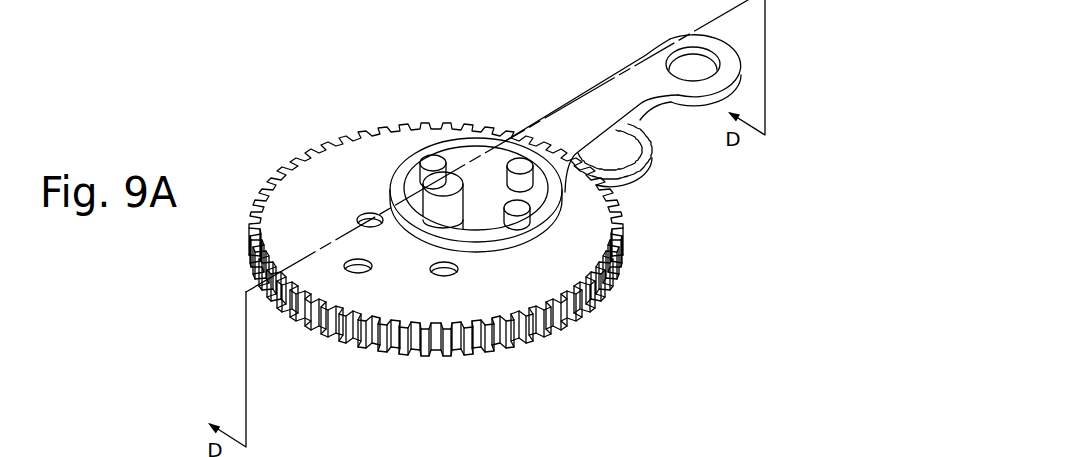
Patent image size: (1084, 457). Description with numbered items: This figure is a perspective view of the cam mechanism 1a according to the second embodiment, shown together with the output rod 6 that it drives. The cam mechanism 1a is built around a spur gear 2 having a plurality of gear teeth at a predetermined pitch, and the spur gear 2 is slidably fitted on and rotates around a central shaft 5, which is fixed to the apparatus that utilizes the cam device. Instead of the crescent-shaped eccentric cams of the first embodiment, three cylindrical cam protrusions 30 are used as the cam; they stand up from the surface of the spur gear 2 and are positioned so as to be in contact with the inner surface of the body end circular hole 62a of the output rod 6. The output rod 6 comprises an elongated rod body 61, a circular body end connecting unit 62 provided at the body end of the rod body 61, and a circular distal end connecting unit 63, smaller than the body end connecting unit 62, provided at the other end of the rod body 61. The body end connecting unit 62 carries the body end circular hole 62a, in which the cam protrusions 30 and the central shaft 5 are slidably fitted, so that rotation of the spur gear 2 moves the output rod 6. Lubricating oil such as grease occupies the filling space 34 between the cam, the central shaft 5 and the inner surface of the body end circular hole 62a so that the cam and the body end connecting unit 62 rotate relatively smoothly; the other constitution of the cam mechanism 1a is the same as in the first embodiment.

The cam mechanism 1a is at (304, 131).
The spur gear 2 is at (554, 282).
The central shaft 5 is at (433, 208).
The cylindrical cam protrusions 30 is at (425, 160).
The filling space 34 is at (481, 222).
The output rod 6 is at (757, 250).
The rod body 61 is at (632, 105).
The body end connecting unit 62 is at (558, 223).
The body end circular hole 62a is at (474, 152).
The distal end connecting unit 63 is at (707, 87).